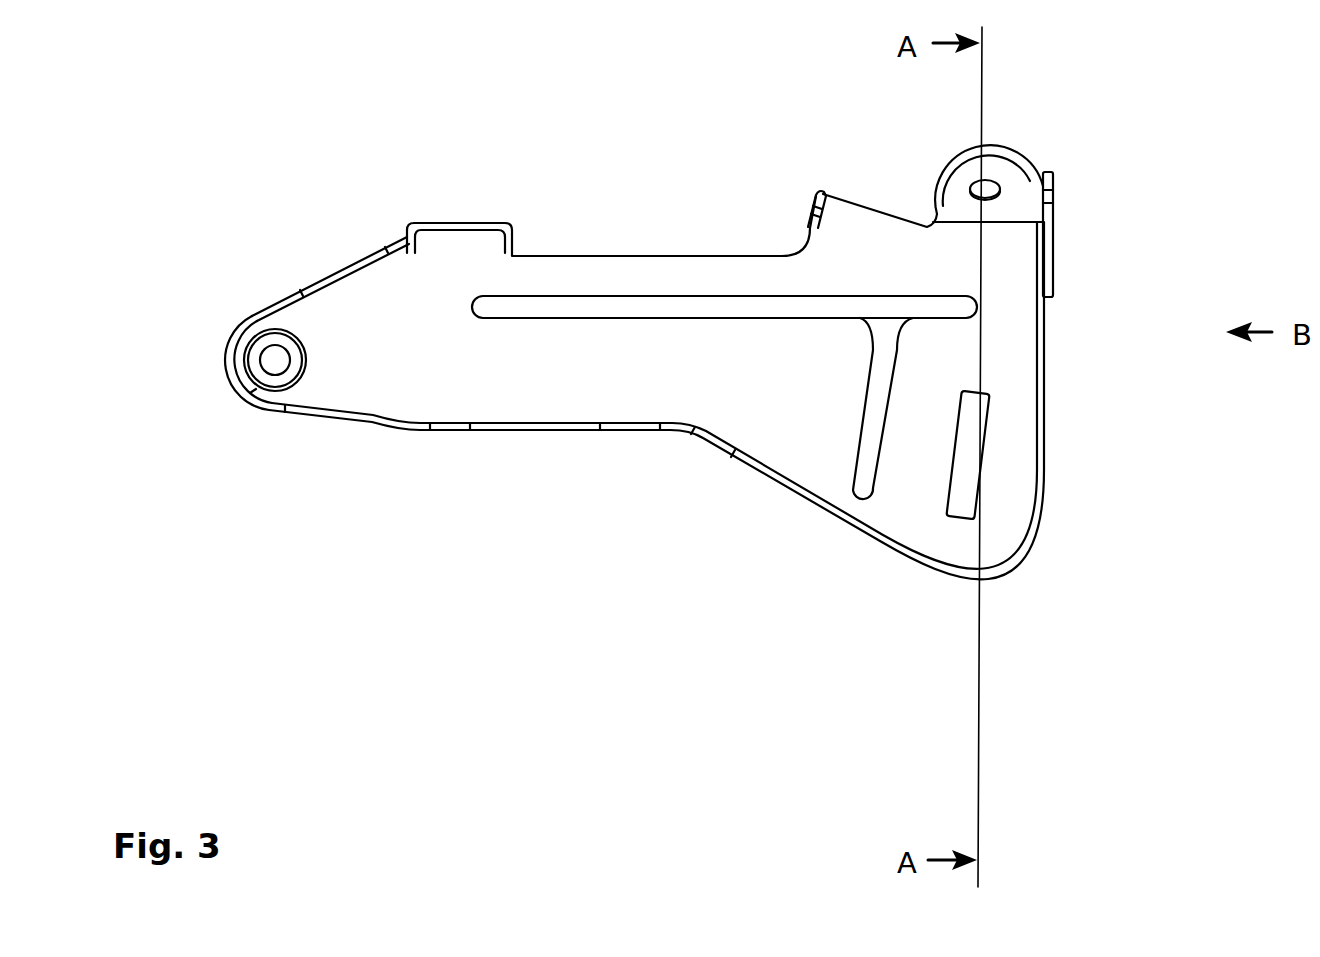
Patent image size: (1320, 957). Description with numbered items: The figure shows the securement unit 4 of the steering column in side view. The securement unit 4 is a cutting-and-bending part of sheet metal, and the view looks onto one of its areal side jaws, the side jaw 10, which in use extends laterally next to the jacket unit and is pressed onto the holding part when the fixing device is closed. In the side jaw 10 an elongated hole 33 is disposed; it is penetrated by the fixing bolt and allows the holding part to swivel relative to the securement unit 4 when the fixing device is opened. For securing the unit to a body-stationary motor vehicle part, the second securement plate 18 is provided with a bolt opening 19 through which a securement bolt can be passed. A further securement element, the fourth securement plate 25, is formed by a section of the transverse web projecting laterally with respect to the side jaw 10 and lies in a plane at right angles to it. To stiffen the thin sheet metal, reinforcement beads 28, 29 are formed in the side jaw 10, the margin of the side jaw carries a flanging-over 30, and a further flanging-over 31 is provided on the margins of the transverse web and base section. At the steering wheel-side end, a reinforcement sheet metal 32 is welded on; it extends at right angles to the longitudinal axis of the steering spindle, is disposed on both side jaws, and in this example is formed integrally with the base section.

The securement unit 4 is at (480, 523).
The side jaw 10 is at (923, 433).
The second securement plate 18 is at (1017, 193).
The bolt opening 19 is at (988, 189).
The fourth securement plate 25 is at (508, 226).
The reinforcement bead 28 is at (867, 447).
The reinforcement bead 29 is at (728, 318).
The flanging-over 30 is at (363, 421).
The flanging-over 31 is at (407, 245).
The reinforcement sheet metal 32 is at (1048, 226).
The elongated hole 33 is at (963, 487).